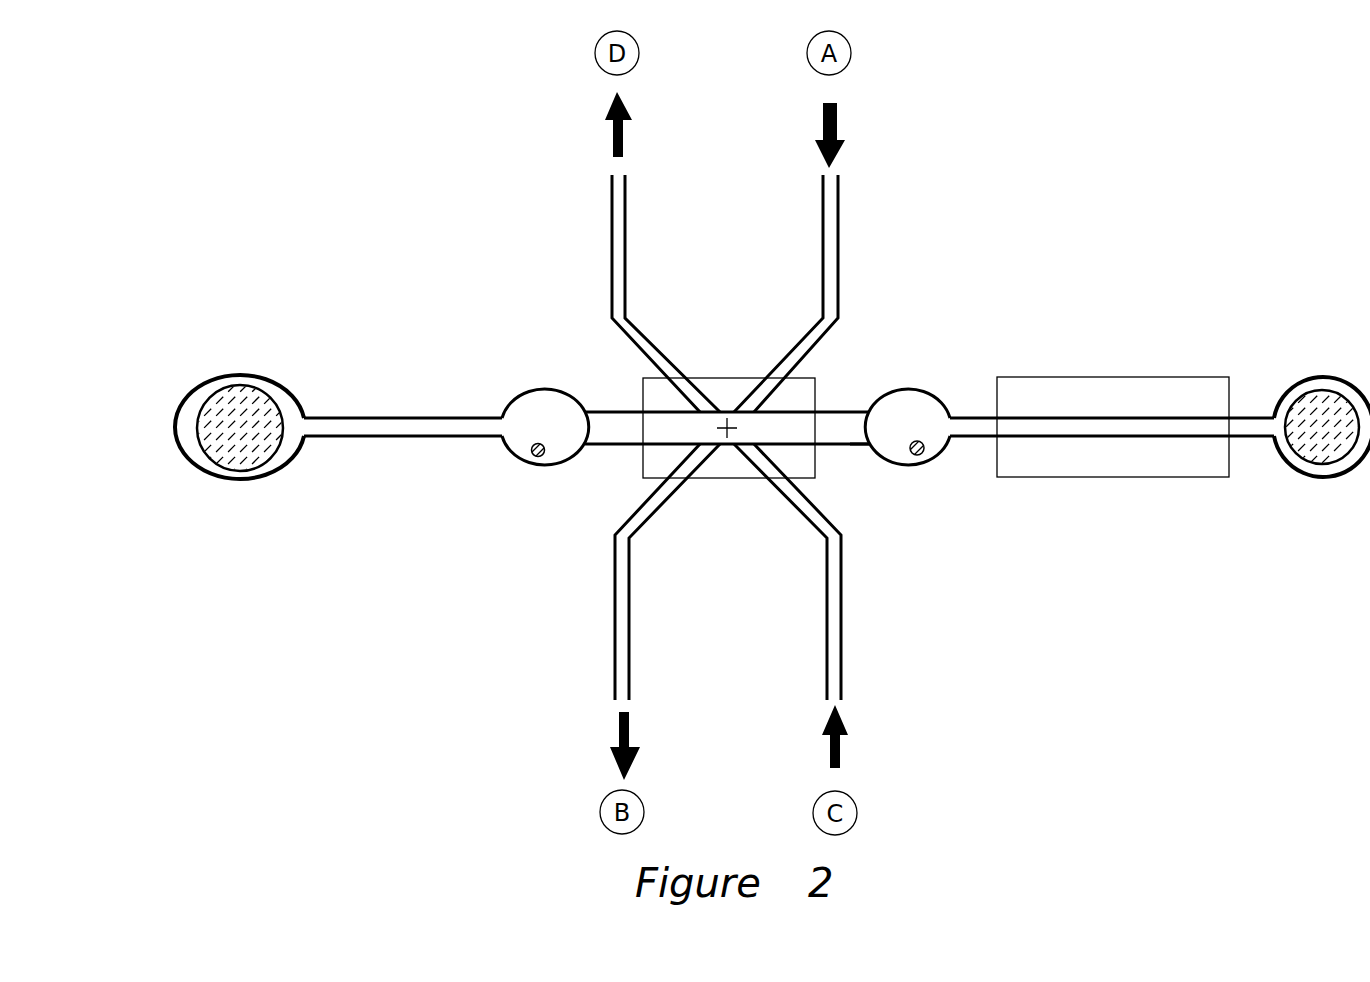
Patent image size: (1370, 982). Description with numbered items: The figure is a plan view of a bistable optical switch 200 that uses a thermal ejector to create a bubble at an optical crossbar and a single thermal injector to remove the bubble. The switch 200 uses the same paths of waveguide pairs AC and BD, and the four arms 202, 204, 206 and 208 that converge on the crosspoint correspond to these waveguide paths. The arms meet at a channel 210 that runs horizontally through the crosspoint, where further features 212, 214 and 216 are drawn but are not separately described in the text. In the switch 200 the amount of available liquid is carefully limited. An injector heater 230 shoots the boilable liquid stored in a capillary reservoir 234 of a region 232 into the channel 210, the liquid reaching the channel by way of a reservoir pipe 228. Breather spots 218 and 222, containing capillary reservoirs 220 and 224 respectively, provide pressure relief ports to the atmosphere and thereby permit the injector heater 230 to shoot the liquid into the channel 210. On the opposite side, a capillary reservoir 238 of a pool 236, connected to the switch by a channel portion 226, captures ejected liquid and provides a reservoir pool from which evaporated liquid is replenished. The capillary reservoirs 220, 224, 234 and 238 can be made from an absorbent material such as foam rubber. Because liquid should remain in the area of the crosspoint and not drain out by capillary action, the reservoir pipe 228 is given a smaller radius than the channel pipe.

The switch 200 is at (1097, 152).
The inlet channel A 202 is at (838, 220).
The outlet channel B 204 is at (630, 637).
The inlet channel C 206 is at (841, 637).
The outlet channel D 208 is at (627, 211).
The channel 210 is at (612, 410).
The lower wall of main channel 212 is at (577, 446).
The main channel outlet junction 214 is at (872, 443).
The detection region 216 is at (815, 388).
The breather spot 218 is at (528, 389).
The capillary reservoir 220 is at (530, 453).
The breather spot 222 is at (910, 390).
The capillary reservoir 224 is at (905, 446).
The left supply channel 226 is at (388, 417).
The reservoir pipe 228 is at (975, 438).
The injector heater 230 is at (1145, 377).
The region 232 is at (1307, 378).
The capillary reservoir 234 is at (1301, 441).
The pool 236 is at (200, 385).
The capillary reservoir 238 is at (218, 442).